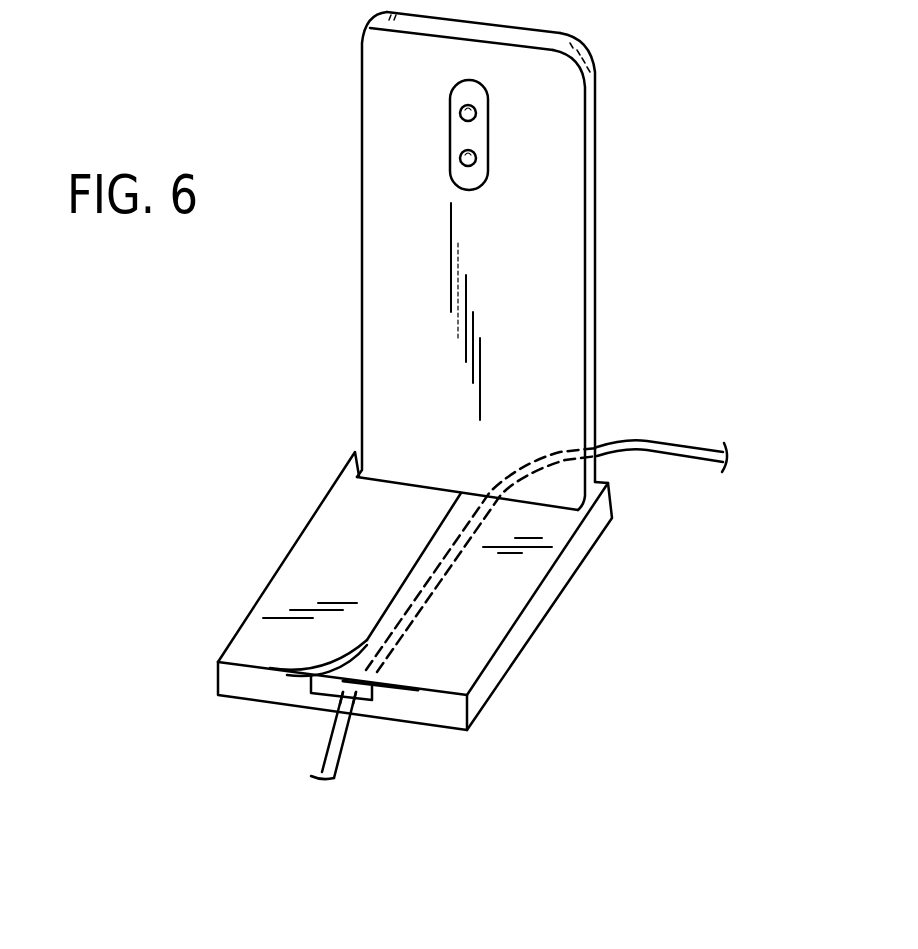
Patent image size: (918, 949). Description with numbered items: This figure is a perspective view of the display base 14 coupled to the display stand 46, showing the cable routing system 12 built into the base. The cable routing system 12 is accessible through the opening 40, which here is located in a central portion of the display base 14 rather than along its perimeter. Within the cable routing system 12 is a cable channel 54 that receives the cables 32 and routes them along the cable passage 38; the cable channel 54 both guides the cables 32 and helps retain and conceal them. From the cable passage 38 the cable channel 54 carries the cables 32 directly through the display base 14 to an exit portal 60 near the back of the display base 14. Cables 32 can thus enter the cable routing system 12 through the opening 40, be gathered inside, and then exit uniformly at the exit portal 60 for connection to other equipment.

The cable routing system 12 is at (306, 730).
The display base 14 is at (233, 582).
The cables 32 is at (703, 448).
The cable passage 38 is at (322, 672).
The opening 40 is at (397, 575).
The display stand 46 is at (685, 93).
The cable channel 54 is at (334, 672).
The exit portal 60 is at (615, 397).